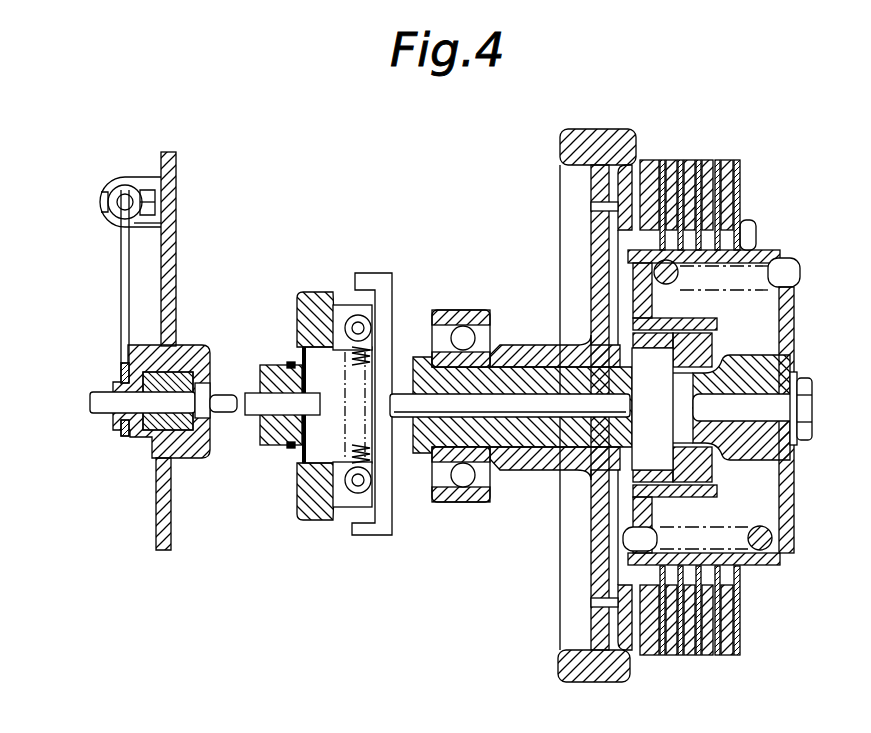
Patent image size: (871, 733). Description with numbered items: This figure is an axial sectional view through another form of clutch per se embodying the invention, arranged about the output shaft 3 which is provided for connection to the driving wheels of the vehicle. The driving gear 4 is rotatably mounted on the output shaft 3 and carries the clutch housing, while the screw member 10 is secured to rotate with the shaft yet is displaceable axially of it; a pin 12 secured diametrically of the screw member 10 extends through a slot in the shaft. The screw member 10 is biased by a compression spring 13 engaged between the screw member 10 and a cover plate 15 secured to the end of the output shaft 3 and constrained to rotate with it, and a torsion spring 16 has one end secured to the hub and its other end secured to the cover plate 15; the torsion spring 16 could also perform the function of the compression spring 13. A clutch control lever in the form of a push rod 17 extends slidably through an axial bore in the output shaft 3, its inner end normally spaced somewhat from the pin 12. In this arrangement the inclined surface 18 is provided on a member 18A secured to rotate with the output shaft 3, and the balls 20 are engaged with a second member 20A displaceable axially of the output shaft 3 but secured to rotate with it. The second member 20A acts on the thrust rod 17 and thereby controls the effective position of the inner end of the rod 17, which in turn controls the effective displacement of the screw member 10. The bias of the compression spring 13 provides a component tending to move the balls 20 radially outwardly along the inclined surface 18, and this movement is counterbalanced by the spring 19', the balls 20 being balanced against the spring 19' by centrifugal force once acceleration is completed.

The output shaft 3 is at (552, 383).
The driving gear 4 is at (603, 252).
The screw member 10 is at (655, 448).
The pin 12 is at (697, 457).
The compression spring 13 is at (690, 407).
The cover plate 15 is at (781, 323).
The torsion spring 16 is at (728, 280).
The push rod 17 is at (565, 403).
The inclined surface 18 is at (392, 533).
The member 18A is at (303, 473).
The spring 19' is at (302, 321).
The balls 20 is at (372, 500).
The second member 20A is at (393, 273).